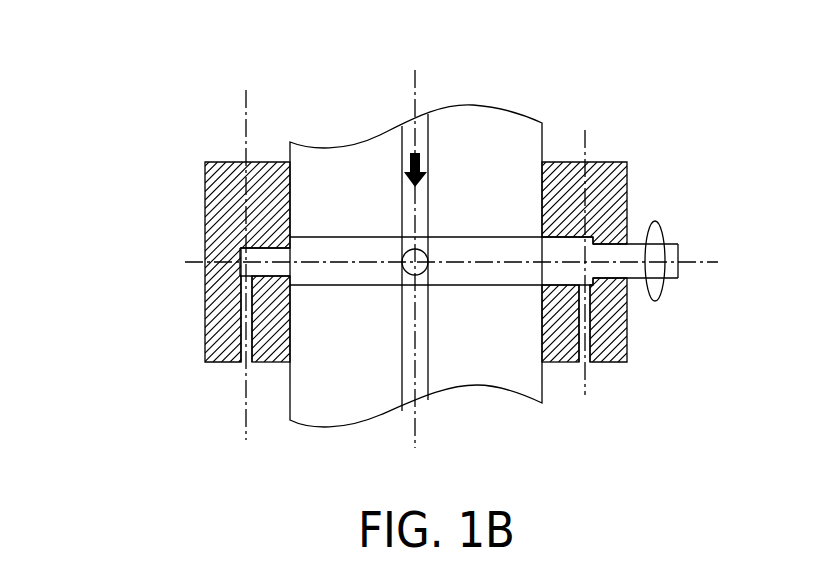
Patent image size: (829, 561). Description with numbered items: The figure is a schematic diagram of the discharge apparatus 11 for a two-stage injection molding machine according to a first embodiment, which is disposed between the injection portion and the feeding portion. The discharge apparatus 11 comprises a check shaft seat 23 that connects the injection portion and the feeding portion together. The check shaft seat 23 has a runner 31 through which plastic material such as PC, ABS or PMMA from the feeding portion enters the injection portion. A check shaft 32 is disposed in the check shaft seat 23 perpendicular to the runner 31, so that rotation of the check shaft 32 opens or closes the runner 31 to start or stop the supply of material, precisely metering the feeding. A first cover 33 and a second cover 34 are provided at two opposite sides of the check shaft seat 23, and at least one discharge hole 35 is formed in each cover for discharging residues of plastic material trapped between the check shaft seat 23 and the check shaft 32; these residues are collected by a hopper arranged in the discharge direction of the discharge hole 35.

The discharge apparatus 11 is at (155, 236).
The check shaft seat 23 is at (482, 140).
The runner 31 is at (400, 135).
The check shaft 32 is at (662, 256).
The first cover 33 is at (230, 184).
The second cover 34 is at (602, 178).
The discharge hole 35 is at (245, 363).